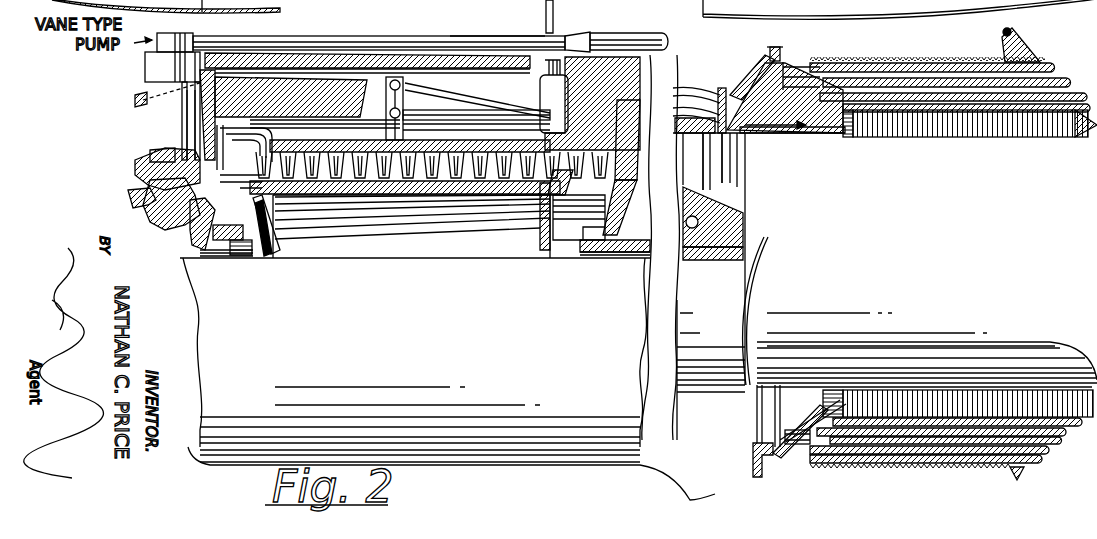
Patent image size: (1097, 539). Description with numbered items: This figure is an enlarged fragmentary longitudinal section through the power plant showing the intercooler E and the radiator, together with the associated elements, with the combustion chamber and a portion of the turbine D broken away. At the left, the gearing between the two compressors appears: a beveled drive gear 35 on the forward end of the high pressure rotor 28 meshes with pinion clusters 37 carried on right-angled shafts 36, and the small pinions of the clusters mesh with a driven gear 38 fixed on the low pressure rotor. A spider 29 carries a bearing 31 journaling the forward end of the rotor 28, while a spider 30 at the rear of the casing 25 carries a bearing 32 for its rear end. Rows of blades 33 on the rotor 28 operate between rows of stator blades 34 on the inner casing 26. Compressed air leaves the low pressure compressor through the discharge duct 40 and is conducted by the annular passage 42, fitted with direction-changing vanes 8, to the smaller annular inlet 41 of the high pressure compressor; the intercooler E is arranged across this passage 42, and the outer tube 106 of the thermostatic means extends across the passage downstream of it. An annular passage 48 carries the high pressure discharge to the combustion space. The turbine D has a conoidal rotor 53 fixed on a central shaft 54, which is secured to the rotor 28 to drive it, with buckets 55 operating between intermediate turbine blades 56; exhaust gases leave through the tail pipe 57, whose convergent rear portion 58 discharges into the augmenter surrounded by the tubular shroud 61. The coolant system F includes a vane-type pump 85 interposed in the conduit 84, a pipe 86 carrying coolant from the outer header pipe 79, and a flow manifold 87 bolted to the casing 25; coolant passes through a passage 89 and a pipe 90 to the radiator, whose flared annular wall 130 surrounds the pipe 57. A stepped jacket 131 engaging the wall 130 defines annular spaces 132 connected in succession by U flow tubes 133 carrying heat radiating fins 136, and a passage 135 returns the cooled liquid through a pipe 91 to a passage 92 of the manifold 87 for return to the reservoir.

The pump 85 is at (176, 34).
The direction-changing guides or vanes 8 is at (306, 80).
The intercooler E is at (330, 83).
The outer tube 106 is at (366, 110).
The casing 25 is at (410, 60).
The multiple flow manifold 87 is at (490, 36).
The system for supplying cooling medium F is at (543, 80).
The passage 89 is at (615, 42).
The passage 92 is at (656, 40).
The annular passage 48 is at (900, 9).
The pipe 91 is at (684, 92).
The pipe 90 is at (700, 117).
The passage 135 is at (760, 80).
The stepped jacket 131 is at (803, 57).
The heat radiating fins 136 is at (922, 60).
The tubular shroud 61 is at (1014, 44).
The convergent rear portion 58 is at (1096, 140).
The discharge duct 40 is at (143, 97).
The right-angled shafts 36 is at (140, 163).
The spider 29 is at (140, 173).
The annular passage 42 is at (220, 147).
The header pipe 79 is at (400, 82).
The pipe 86 is at (440, 100).
The inner casing 26 is at (480, 143).
The conduit 84 is at (500, 113).
The turbine blades 56 is at (730, 167).
The axial flow buckets 55 is at (713, 182).
The rotor 53 is at (727, 222).
The turbine D is at (752, 233).
The central shaft 54 is at (699, 360).
The duct or pipe 57 is at (955, 234).
The driven gear 38 is at (133, 202).
The pinion clusters 37 is at (163, 225).
The beveled drive gear 35 is at (193, 232).
The bearing 31 is at (227, 235).
The annular inlet 41 is at (253, 190).
The rows of blades 33 is at (437, 172).
The rotor 28 is at (487, 180).
The stator blades 34 is at (529, 175).
The spider 30 is at (610, 225).
The bearing 32 is at (598, 240).
The annular apron or wall 130 is at (800, 420).
The annular spaces 132 is at (780, 494).
The U flow tubes 133 is at (1096, 495).